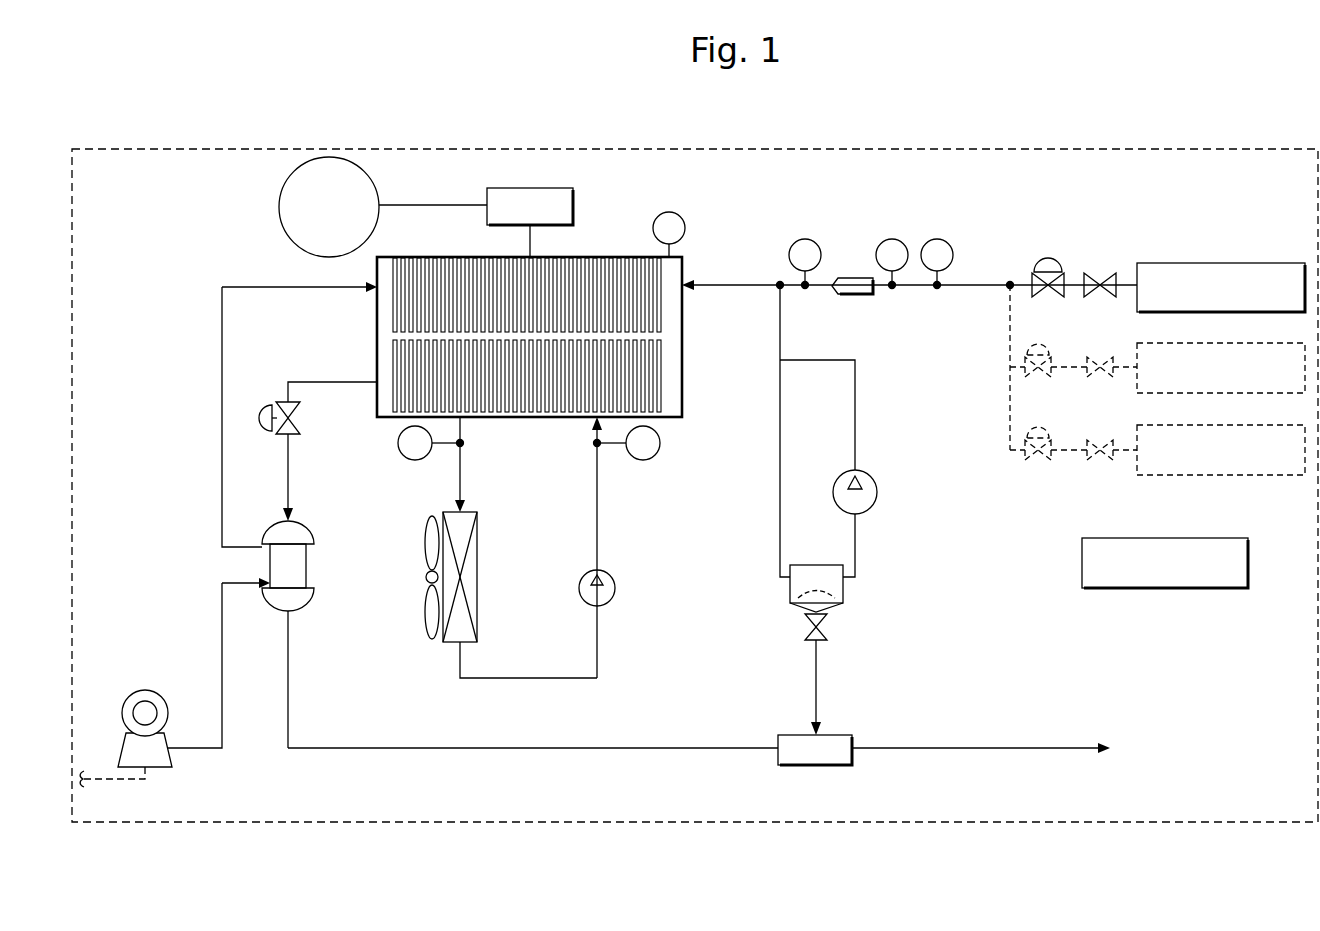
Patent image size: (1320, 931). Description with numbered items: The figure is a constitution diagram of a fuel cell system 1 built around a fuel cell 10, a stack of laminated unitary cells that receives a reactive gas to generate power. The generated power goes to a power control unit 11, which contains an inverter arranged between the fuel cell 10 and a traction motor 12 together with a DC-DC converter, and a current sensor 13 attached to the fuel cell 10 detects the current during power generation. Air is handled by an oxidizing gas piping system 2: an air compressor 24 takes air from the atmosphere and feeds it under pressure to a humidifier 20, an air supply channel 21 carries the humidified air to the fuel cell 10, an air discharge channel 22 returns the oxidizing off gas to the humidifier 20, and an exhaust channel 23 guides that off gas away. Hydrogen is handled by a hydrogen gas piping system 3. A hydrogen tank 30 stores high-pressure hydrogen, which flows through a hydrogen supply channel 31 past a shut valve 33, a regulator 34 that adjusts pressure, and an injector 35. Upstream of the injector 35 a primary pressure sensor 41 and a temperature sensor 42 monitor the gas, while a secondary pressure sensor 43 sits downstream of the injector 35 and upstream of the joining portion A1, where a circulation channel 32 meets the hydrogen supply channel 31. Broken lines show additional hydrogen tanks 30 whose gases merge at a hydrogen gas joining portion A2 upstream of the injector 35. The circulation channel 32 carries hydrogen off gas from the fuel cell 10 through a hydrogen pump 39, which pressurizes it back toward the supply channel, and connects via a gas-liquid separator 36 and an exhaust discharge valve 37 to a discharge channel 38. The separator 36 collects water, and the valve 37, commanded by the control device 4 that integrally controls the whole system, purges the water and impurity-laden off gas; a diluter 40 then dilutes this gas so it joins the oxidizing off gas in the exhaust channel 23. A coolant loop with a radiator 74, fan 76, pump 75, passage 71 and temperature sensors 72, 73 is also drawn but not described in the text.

The fuel cell system 1 is at (520, 147).
The oxidizing gas piping system 2 is at (340, 519).
The hydrogen gas piping system 3 is at (755, 566).
The control device 4 is at (1162, 538).
The fuel cell 10 is at (682, 418).
The power control unit 11 is at (573, 211).
The traction motor 12 is at (279, 212).
The current sensor 13 is at (675, 212).
The humidifier 20 is at (308, 574).
The air supply channel 21 is at (222, 492).
The air discharge channel 22 is at (291, 490).
The exhaust channel 23 is at (715, 748).
The air compressor 24 is at (152, 690).
The hydrogen tank 30 is at (1253, 263).
The hydrogen supply channel 31 is at (733, 283).
The circulation channel 32 is at (779, 530).
The shut valve 33 is at (1093, 276).
The regulator 34 is at (1048, 258).
The injector 35 is at (838, 278).
The gas-liquid separator 36 is at (805, 565).
The exhaust discharge valve 37 is at (805, 630).
The discharge channel 38 is at (818, 692).
The hydrogen pump 39 is at (872, 480).
The diluter 40 is at (858, 745).
The primary pressure sensor 41 is at (898, 240).
The temperature sensor 42 is at (943, 240).
The secondary pressure sensor 43 is at (812, 240).
The coolant passage 71 is at (599, 518).
The temperature sensor (coolant inlet) 72 is at (645, 460).
The temperature sensor (coolant outlet) 73 is at (402, 454).
The radiator 74 is at (478, 547).
The coolant pump 75 is at (608, 605).
The radiator fan 76 is at (427, 581).
The joining portion A1 is at (777, 289).
The hydrogen gas joining portion A2 is at (1008, 290).